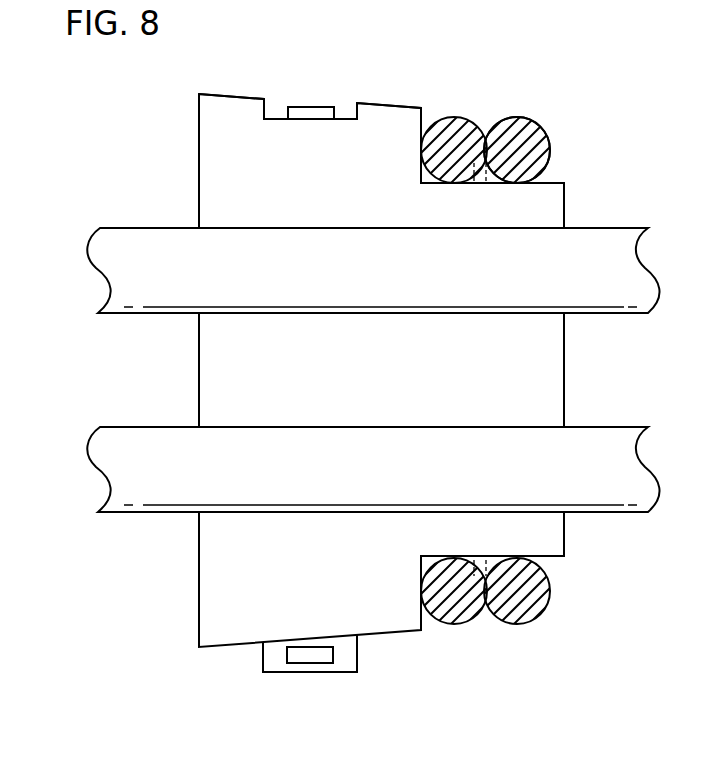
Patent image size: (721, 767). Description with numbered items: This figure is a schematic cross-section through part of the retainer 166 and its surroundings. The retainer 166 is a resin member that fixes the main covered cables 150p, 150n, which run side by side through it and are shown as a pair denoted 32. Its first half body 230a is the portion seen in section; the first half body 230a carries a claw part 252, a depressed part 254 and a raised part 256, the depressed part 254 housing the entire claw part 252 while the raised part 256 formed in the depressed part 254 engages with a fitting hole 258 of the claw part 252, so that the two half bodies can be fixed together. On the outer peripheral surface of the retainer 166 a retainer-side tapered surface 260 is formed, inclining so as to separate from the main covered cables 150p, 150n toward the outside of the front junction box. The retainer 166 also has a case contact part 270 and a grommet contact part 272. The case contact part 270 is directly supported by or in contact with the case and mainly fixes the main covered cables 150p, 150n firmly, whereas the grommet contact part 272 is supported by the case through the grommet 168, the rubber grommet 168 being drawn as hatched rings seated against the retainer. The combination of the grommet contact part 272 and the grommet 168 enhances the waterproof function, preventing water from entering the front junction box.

The first half body 230a is at (199, 127).
The retainer-side tapered surface 260 is at (219, 94).
The depressed part 254 is at (267, 111).
The raised part 256 is at (311, 106).
The case contact part 270 is at (374, 103).
The retainer 166 is at (488, 51).
The grommet contact part 272 is at (477, 167).
The grommet 168 is at (539, 142).
The bus bar pair 32 is at (339, 370).
The main covered cable 150p is at (141, 308).
The main covered cable 150n is at (127, 438).
The claw part 252 is at (282, 669).
The fitting hole 258 is at (320, 658).